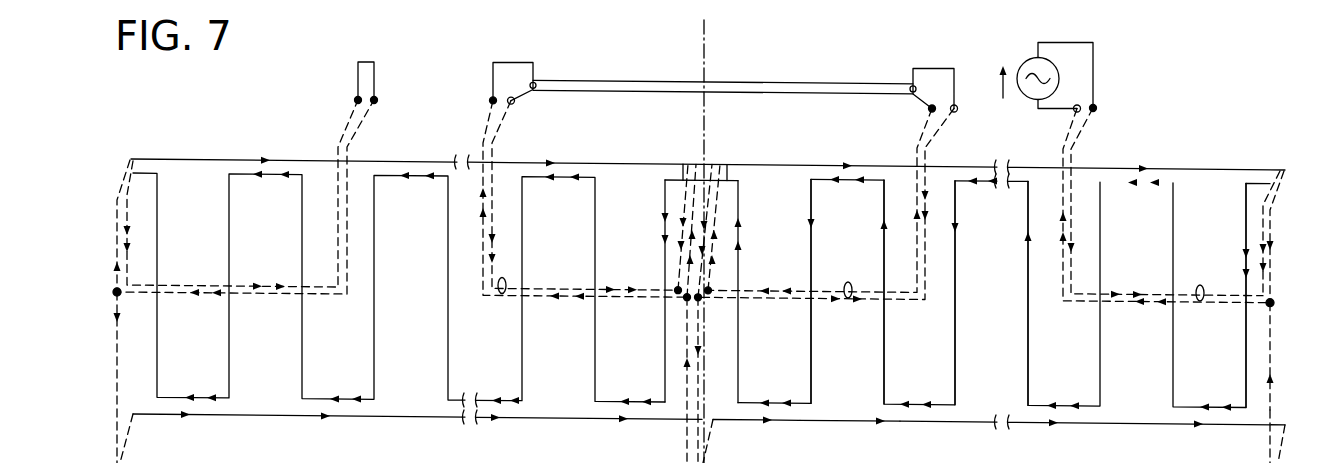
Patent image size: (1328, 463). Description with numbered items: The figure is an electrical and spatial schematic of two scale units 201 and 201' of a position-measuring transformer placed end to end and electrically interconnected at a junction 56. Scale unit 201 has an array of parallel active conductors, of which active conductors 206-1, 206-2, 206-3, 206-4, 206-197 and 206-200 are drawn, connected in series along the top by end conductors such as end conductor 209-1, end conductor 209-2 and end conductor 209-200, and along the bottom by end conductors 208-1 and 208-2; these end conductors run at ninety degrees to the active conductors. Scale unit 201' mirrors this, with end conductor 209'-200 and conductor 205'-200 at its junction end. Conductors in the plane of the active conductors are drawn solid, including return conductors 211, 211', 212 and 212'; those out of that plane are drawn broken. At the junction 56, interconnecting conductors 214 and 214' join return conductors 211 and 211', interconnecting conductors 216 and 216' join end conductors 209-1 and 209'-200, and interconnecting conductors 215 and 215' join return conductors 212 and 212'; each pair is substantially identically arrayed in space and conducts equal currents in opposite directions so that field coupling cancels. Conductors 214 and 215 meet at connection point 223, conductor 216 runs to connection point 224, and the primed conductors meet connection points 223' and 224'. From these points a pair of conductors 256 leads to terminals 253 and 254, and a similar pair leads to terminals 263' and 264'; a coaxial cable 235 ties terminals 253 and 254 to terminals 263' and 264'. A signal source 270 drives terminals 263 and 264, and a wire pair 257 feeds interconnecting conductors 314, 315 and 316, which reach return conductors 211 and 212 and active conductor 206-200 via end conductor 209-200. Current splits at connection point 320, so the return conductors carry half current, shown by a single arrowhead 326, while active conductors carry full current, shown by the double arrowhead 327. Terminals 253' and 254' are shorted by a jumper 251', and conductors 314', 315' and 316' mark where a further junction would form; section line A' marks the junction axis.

The junction 56 is at (706, 45).
The scale unit 201' is at (399, 264).
The scale unit 201 is at (992, 265).
The electrode finger 205'-200 is at (634, 291).
The active conductor 206-1 is at (745, 228).
The active conductor 206-2 is at (815, 220).
The active conductor 206-3 is at (884, 342).
The active conductor 206-4 is at (955, 302).
The active conductor 206-197 is at (1028, 338).
The active conductor 206-200 is at (1246, 380).
The end conductor 208-1 is at (748, 420).
The end conductor 208-2 is at (938, 422).
The end conductor 209'-200 is at (647, 157).
The end conductor 209-1 is at (727, 164).
The end conductor 209-2 is at (817, 171).
The end conductor 209-200 is at (1253, 187).
The return conductor 211' is at (417, 145).
The return conductor 211 is at (994, 156).
The return conductor 212' is at (411, 436).
The return conductor 212 is at (1042, 439).
The interconnecting conductor 214' is at (665, 140).
The interconnecting conductor 214 is at (738, 140).
The interconnecting conductor 215' is at (649, 380).
The interconnecting conductor 215 is at (738, 380).
The interconnecting conductor 216' is at (650, 230).
The interconnecting conductor 216 is at (746, 231).
The connection point 223' is at (648, 310).
The connection point 223 is at (741, 310).
The connection point 224' is at (641, 265).
The connection point 224 is at (746, 274).
The coaxial cable 235 is at (750, 82).
The jumper 251' is at (386, 60).
The terminal 253' is at (401, 87).
The terminal 254' is at (324, 88).
The terminal 263' is at (584, 195).
The terminal 264' is at (551, 181).
The terminal 253 is at (831, 182).
The terminal 254 is at (848, 203).
The terminal 263 is at (1166, 196).
The terminal 264 is at (1143, 205).
The pair of conductors 256 is at (502, 294).
The coaxial cable or wire pair 257 is at (1200, 301).
The signal source 270 is at (1020, 60).
The interconnecting conductor 314' is at (214, 198).
The interconnecting conductor 316' is at (206, 195).
The interconnecting conductor 315' is at (80, 377).
The interconnecting conductor 314 is at (1291, 233).
The interconnecting conductor 316 is at (1294, 237).
The interconnecting conductor 315 is at (1295, 417).
The connection point 320 is at (1273, 300).
The arrowhead 326 is at (1272, 345).
The double arrowhead 327 is at (1246, 256).
The section marker A' is at (721, 443).